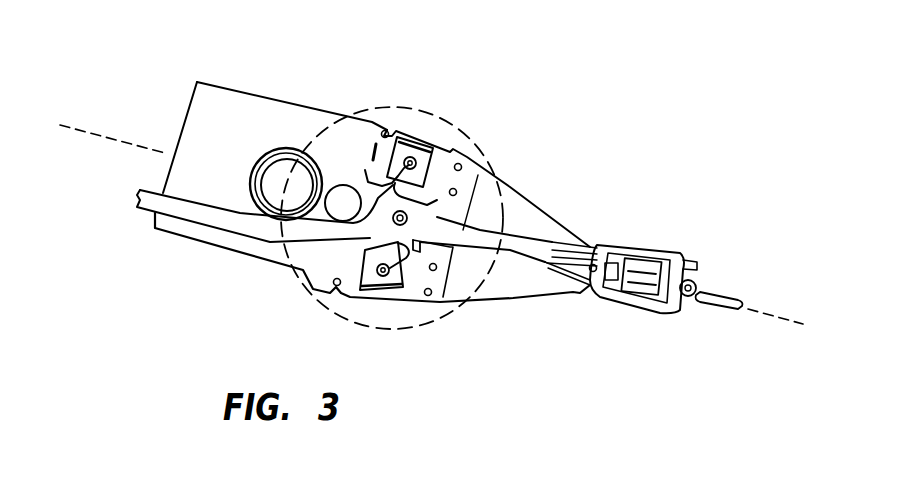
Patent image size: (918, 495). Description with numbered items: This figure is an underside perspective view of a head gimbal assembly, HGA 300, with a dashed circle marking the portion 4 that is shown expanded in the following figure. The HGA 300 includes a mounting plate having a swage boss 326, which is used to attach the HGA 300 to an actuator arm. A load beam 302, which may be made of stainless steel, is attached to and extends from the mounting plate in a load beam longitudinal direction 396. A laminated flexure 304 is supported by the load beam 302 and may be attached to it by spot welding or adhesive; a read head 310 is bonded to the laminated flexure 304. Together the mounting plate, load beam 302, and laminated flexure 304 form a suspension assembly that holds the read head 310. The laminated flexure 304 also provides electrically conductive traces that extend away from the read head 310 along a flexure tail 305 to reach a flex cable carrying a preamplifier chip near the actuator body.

The head gimbal assembly 300 is at (570, 75).
The FIG. 4 detail portion 4 is at (403, 95).
The load beam 302 is at (535, 223).
The laminated flexure 304 is at (520, 257).
The flexure tail 305 is at (147, 213).
The swage boss 326 is at (263, 157).
The read head 310 is at (653, 260).
The load beam longitudinal direction 396 is at (777, 318).